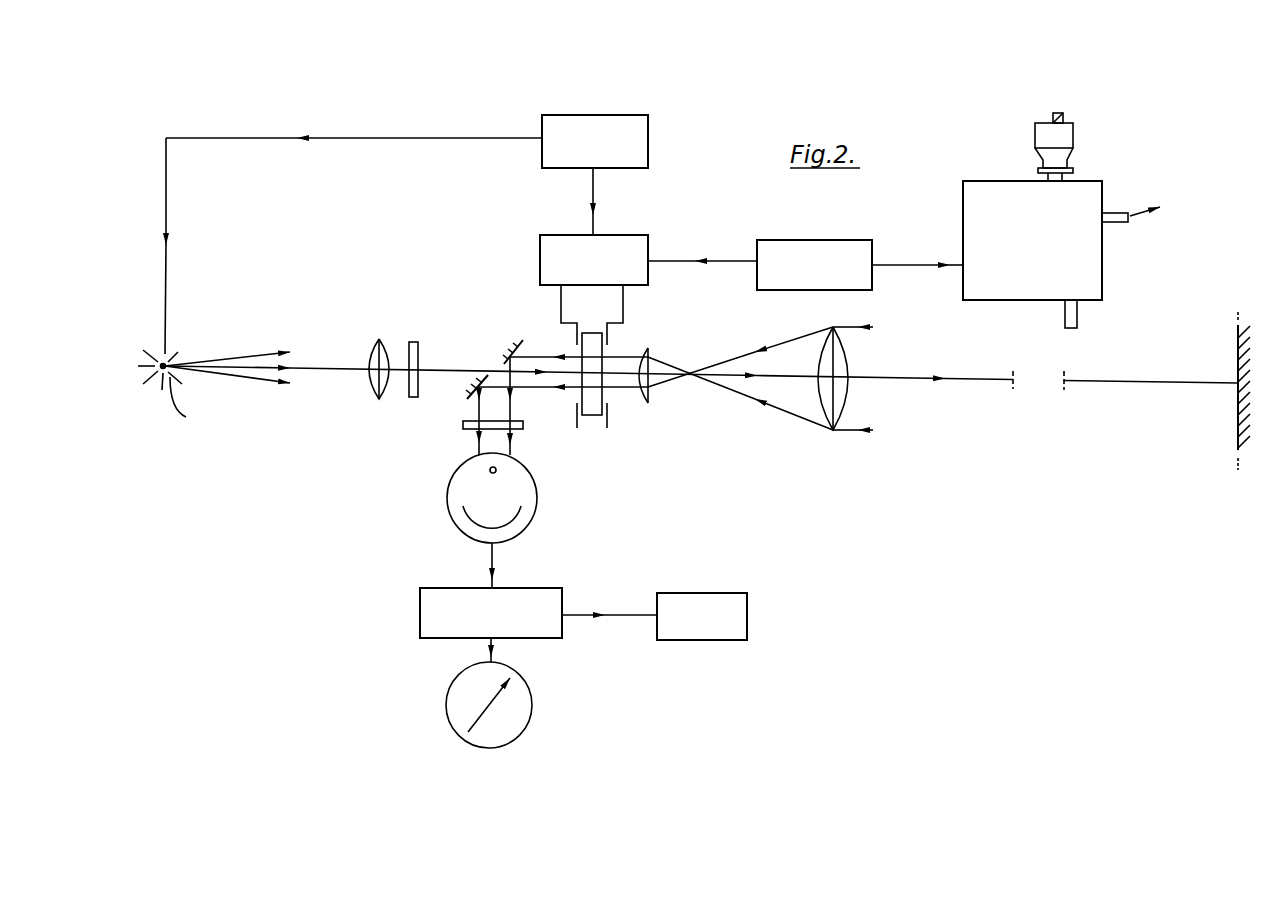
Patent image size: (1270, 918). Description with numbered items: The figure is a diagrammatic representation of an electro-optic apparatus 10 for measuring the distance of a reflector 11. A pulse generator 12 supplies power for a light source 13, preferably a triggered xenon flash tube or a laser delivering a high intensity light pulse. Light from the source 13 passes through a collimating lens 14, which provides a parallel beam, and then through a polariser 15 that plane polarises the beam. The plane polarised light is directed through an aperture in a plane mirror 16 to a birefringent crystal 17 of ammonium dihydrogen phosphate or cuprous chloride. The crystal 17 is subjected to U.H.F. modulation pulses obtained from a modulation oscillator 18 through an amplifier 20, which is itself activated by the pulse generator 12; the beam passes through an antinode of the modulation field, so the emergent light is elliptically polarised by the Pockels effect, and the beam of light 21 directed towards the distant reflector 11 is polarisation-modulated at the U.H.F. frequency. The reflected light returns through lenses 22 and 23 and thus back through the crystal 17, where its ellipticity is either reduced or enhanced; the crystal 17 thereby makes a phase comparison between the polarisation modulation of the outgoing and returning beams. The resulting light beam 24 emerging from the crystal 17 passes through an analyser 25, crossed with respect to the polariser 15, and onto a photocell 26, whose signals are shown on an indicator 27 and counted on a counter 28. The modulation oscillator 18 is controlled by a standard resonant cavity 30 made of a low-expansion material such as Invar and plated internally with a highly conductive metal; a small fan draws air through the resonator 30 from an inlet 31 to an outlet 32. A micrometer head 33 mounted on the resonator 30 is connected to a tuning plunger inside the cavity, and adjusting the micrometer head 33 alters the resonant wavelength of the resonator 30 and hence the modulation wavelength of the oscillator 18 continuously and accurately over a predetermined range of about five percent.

The electro-optic apparatus 10 is at (665, 497).
The reflector 11 is at (1236, 393).
The pulse generator 12 is at (543, 147).
The light source 13 is at (170, 357).
The collimating lens 14 is at (377, 350).
The polariser 15 is at (418, 345).
The plane mirror 16 is at (518, 343).
The birefringent crystal 17 is at (595, 415).
The modulation oscillator 18 is at (757, 264).
The amplifier 20 is at (540, 258).
The beam of light 21 is at (1000, 380).
The lens 22 is at (840, 400).
The lens 23 is at (645, 388).
The resulting light beam 24 is at (481, 419).
The analyser 25 is at (523, 426).
The photocell 26 is at (452, 485).
The indicator 27 is at (532, 689).
The counter 28 is at (698, 592).
The standard resonant cavity 30 is at (1103, 197).
The inlet 31 is at (1077, 313).
The outlet 32 is at (1113, 222).
The micrometer head 33 is at (1068, 133).